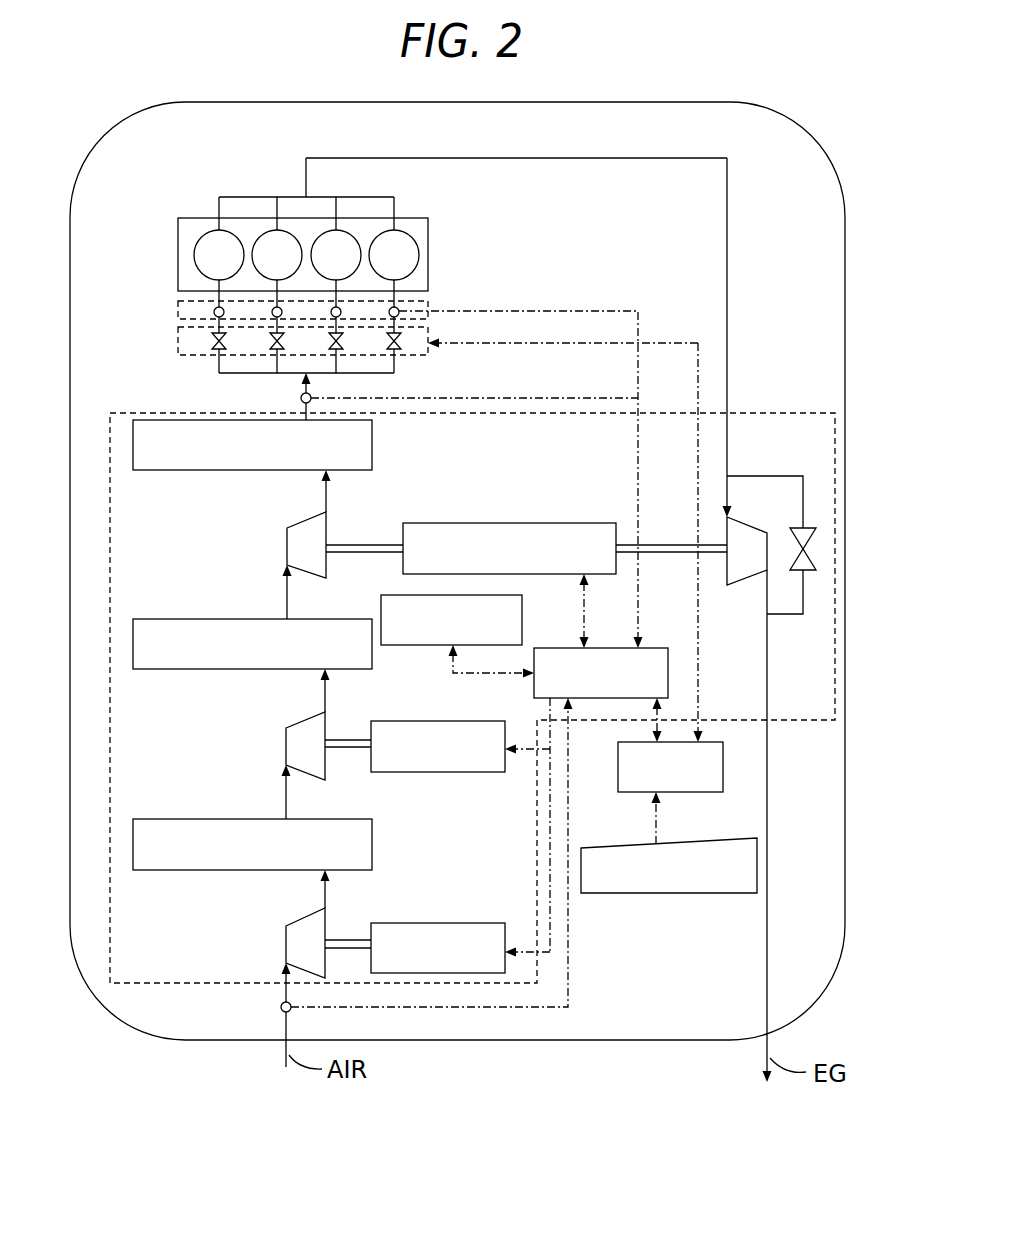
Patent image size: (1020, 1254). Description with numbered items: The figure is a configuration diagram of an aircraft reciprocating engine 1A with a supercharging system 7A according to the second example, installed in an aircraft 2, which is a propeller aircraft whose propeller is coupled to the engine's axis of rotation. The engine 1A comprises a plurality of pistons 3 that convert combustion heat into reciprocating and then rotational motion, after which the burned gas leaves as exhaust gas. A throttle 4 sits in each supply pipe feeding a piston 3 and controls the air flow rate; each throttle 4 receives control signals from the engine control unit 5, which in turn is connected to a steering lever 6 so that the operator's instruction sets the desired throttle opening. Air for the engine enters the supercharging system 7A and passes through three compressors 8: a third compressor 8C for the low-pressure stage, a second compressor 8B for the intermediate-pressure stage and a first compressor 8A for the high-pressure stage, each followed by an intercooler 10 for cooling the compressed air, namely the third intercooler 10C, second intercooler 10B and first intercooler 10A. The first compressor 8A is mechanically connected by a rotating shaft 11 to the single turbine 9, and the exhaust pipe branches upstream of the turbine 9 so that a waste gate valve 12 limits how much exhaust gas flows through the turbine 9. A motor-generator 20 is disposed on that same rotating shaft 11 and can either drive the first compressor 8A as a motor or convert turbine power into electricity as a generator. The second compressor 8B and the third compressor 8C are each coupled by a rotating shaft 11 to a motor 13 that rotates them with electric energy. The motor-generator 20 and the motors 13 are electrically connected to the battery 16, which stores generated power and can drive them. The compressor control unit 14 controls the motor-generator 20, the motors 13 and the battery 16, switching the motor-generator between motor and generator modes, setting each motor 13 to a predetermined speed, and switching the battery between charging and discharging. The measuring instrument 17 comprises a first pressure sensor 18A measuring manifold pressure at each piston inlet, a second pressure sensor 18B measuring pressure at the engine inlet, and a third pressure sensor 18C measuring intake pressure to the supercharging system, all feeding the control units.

The aircraft 2 is at (646, 99).
The aircraft reciprocating engine 1A is at (446, 263).
The piston 3 is at (404, 236).
The measuring instrument 17 is at (170, 307).
The first pressure sensor 18A is at (401, 312).
The throttle 4 is at (213, 351).
The second pressure sensor 18B is at (300, 398).
The supercharging system 7A is at (768, 412).
The intercooler 10 is at (249, 671).
The first intercooler 10A is at (235, 470).
The second intercooler 10B is at (232, 670).
The third intercooler 10C is at (240, 871).
The compressor 8 is at (256, 736).
The first compressor 8A is at (284, 546).
The second compressor 8B is at (284, 746).
The third compressor 8C is at (284, 946).
The rotating shaft 11 is at (370, 541).
The motor-generator 20 is at (531, 522).
The battery 16 is at (380, 610).
The compressor control unit 14 is at (573, 648).
The turbine 9 is at (746, 581).
The waste gate valve 12 is at (808, 572).
The motor 13 is at (441, 773).
The engine control unit 5 is at (672, 793).
The steering lever 6 is at (667, 894).
The third pressure sensor 18C is at (281, 1007).